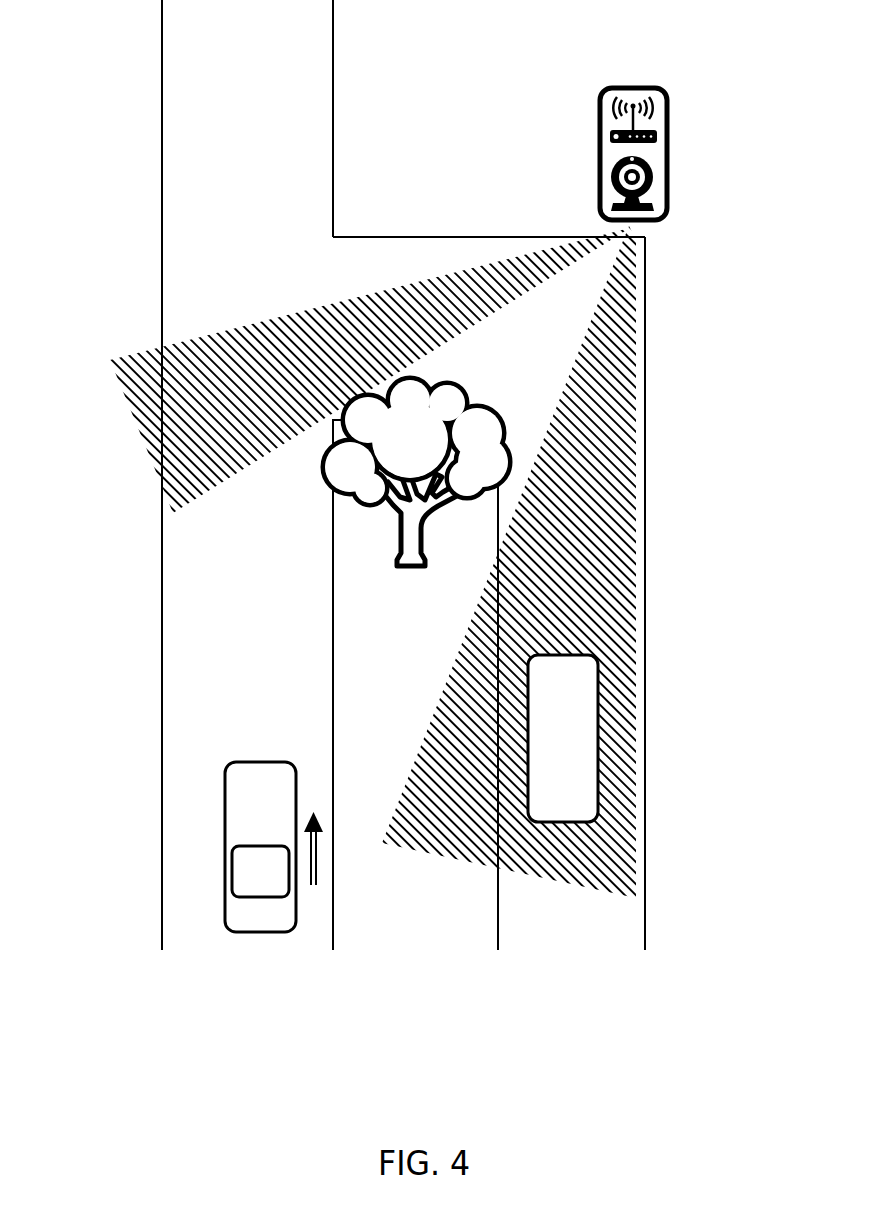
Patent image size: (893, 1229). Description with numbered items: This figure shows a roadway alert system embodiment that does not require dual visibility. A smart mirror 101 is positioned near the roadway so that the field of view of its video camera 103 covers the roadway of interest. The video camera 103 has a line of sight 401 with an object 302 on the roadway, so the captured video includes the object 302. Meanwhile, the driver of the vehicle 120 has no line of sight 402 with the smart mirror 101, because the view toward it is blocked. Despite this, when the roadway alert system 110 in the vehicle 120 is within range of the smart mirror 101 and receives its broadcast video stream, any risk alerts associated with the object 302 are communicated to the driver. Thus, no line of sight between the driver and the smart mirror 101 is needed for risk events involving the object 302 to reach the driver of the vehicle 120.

The smart mirror 101 is at (631, 154).
The video camera 103 is at (655, 181).
The roadway alert system 110 is at (250, 880).
The vehicle 120 is at (223, 802).
The object 302 is at (603, 773).
The line of sight 401 is at (638, 412).
The line of sight 402 is at (263, 320).